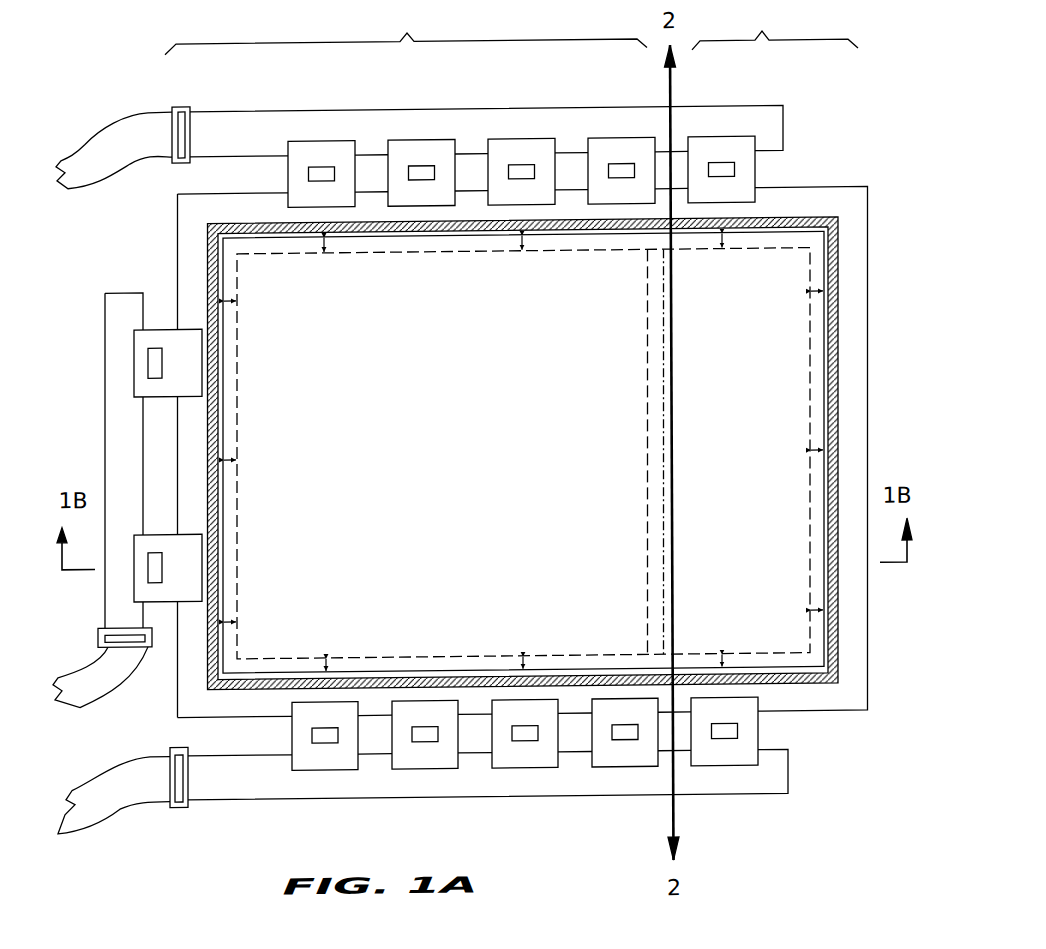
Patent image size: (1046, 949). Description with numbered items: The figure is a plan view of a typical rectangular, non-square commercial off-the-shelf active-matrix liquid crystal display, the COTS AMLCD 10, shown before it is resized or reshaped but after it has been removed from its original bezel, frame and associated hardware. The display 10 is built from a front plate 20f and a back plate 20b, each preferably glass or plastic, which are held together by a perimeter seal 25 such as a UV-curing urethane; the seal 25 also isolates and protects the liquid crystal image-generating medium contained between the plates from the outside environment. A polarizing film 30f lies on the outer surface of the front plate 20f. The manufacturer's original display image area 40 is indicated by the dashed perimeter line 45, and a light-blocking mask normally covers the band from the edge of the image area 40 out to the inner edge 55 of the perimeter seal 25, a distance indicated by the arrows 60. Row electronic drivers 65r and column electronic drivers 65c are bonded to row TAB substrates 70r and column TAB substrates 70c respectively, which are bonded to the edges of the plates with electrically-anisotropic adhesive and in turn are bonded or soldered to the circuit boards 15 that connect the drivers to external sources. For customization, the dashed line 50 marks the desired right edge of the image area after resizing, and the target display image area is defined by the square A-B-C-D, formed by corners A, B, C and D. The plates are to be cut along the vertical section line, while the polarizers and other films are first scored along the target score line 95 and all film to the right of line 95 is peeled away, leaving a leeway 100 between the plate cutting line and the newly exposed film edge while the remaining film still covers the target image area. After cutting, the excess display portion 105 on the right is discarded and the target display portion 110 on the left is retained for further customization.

The COTS AMLCD 10 is at (853, 166).
The circuit boards 15 is at (773, 129).
The front plate 20f is at (838, 223).
The back plate 20b is at (855, 291).
The perimeter seal 25 is at (233, 225).
The polarizing film 30f is at (826, 258).
The original display image area 40 is at (778, 414).
The dashed perimeter line 45 is at (838, 327).
The dashed line 50 is at (647, 347).
The inner edge of perimeter seal 55 is at (825, 358).
The arrows 60 is at (235, 295).
The column electronic drivers 65c is at (320, 168).
The row electronic drivers 65r is at (155, 358).
The column TAB substrates 70c is at (303, 139).
The row TAB substrates 70r is at (145, 384).
The target score line 95 is at (664, 316).
The leeway 100 is at (673, 454).
The excess display portion 105 is at (775, 25).
The target display portion 110 is at (406, 27).
The corner of target display image area A is at (237, 410).
The corner of target display image area B is at (418, 252).
The corner of target display image area C is at (645, 416).
The corner of target display image area D is at (437, 656).